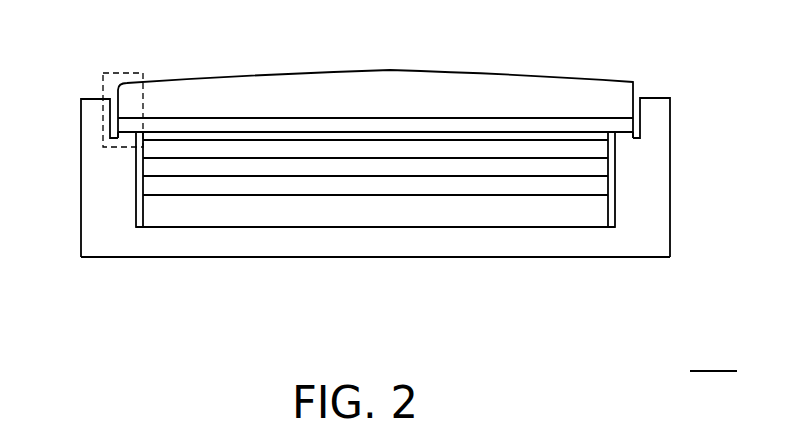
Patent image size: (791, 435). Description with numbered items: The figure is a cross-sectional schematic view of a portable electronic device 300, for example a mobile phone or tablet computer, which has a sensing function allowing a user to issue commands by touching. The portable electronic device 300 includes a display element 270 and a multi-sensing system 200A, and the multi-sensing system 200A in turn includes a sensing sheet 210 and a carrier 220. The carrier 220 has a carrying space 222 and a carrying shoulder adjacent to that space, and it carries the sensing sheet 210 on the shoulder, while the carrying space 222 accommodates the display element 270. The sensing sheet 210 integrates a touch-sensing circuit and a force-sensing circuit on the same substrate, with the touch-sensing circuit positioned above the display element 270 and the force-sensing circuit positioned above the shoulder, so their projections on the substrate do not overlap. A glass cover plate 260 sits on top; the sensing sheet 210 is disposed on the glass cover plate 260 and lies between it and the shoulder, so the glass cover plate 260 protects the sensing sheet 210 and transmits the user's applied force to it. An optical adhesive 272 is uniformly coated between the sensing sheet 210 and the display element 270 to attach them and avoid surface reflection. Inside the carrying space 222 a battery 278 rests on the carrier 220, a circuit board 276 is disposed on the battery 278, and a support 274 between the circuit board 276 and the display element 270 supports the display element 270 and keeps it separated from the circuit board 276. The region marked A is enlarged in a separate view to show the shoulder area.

The multi-sensing system 200A is at (383, 165).
The enlarged region A is at (102, 88).
The sensing sheet 210 is at (230, 123).
The carrier 220 is at (377, 206).
The carrying space 222 is at (233, 228).
The glass cover plate 260 is at (332, 93).
The display element 270 is at (590, 152).
The optical adhesive 272 is at (443, 135).
The support 274 is at (588, 170).
The circuit board 276 is at (588, 188).
The battery 278 is at (588, 217).
The portable electronic device 300 is at (713, 354).